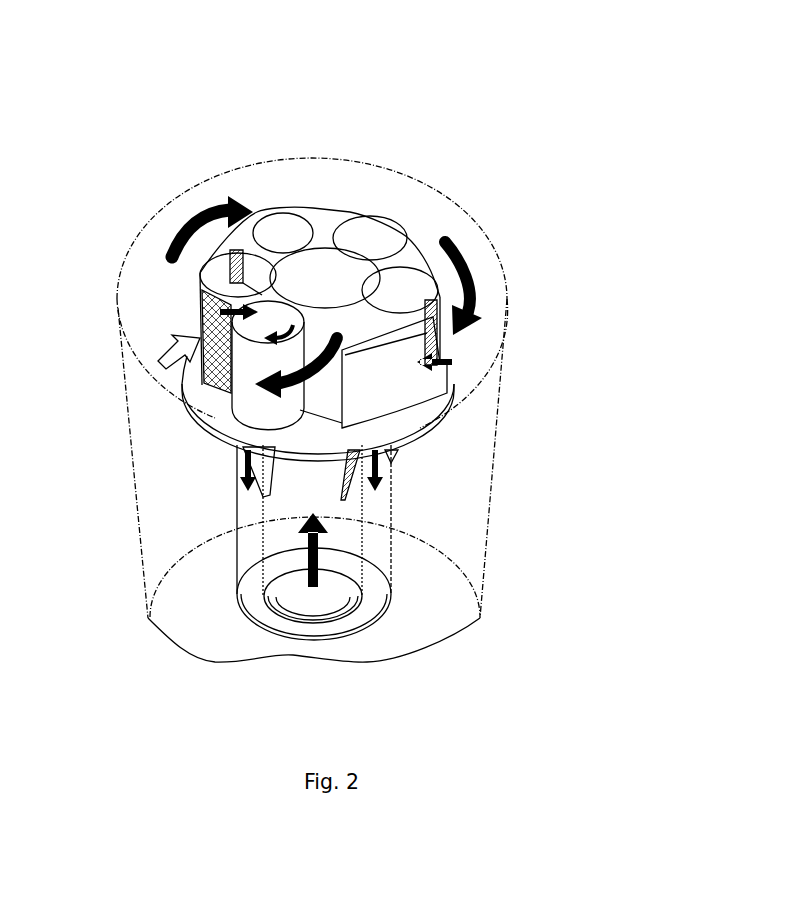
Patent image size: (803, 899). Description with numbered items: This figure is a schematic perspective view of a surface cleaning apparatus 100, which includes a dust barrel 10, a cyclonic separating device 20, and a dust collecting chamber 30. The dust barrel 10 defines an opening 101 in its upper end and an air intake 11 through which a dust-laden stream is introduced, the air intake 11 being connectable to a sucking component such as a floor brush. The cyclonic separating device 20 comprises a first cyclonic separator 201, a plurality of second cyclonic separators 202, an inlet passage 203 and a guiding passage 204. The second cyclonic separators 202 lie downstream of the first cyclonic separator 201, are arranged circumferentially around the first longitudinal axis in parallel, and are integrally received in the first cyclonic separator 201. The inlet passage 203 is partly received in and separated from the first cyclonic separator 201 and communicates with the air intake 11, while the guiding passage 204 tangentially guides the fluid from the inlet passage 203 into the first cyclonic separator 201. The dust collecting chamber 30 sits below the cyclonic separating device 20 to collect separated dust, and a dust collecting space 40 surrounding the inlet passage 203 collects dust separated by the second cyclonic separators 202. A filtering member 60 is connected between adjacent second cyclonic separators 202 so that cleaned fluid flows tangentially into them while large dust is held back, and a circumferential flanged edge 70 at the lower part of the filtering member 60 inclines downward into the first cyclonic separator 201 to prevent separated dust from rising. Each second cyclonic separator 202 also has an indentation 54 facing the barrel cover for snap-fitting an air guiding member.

The surface cleaning apparatus 100 is at (358, 84).
The opening 101 is at (260, 170).
The dust barrel 10 is at (500, 443).
The air intake 11 is at (302, 608).
The cyclonic separating device 20 is at (338, 205).
The first cyclonic separator 201 is at (437, 380).
The second cyclonic separators 202 is at (385, 226).
The inlet passage 203 is at (280, 505).
The guiding passage 204 is at (255, 243).
The dust collecting chamber 30 is at (437, 530).
The dust collecting space 40 is at (250, 542).
The indentation 54 is at (470, 365).
The filtering member 60 is at (200, 300).
The circumferential flanged edge 70 is at (300, 412).